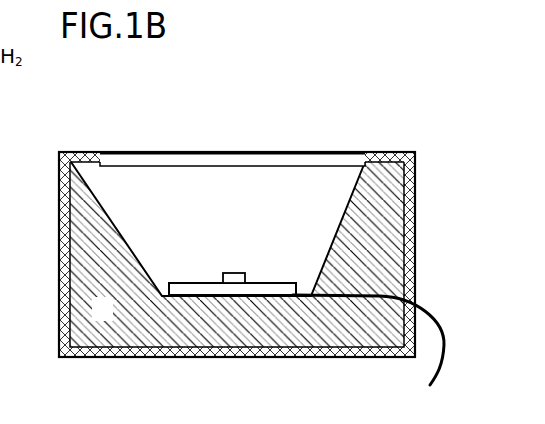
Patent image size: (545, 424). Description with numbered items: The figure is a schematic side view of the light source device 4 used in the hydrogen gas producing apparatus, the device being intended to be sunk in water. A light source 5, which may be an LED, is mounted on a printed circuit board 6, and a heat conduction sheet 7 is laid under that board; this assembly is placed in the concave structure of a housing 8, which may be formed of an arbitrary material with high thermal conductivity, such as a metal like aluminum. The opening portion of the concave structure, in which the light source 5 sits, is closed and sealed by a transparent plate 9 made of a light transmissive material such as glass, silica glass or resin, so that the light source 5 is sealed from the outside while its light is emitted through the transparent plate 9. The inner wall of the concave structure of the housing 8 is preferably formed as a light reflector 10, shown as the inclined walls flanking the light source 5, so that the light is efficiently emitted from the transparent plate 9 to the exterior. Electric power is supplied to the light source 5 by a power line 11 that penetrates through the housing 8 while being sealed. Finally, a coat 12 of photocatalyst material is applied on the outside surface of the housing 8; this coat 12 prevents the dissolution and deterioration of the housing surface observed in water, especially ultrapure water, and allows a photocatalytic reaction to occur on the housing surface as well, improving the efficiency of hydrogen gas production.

The light source device 4 is at (63, 140).
The light source 5 is at (236, 272).
The printed circuit board 6 is at (207, 282).
The heat conduction sheet 7 is at (167, 292).
The housing 8 is at (110, 318).
The transparent plate 9 is at (157, 151).
The light reflector 10 is at (133, 228).
The power line 11 is at (430, 372).
The coat of photocatalyst material 12 is at (58, 235).